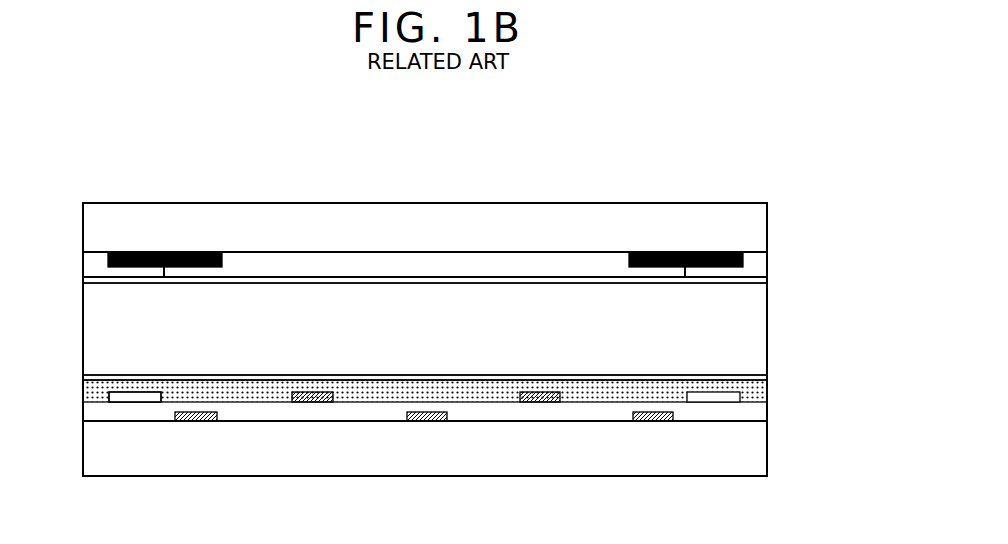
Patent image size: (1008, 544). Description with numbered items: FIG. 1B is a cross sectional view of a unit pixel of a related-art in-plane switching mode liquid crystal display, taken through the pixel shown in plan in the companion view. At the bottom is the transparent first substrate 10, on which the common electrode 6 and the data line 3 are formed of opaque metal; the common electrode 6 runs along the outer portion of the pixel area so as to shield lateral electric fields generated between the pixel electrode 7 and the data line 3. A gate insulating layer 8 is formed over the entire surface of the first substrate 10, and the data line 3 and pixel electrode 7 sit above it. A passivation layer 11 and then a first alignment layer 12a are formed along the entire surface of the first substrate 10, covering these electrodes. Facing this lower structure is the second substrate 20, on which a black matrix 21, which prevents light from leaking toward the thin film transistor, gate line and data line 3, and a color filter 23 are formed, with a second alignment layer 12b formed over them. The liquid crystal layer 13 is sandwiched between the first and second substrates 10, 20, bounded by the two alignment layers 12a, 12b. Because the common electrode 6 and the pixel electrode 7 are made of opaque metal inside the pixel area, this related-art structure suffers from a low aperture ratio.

The second substrate 20 is at (753, 227).
The color filter 23 is at (490, 265).
The black matrix 21 is at (650, 252).
The second alignment layer 12b is at (753, 280).
The liquid crystal layer 13 is at (753, 332).
The first alignment layer 12a is at (753, 378).
The passivation layer 11 is at (753, 393).
The gate insulating layer 8 is at (753, 413).
The first substrate 10 is at (753, 455).
The data line 3 is at (132, 402).
The common electrode 6 is at (192, 421).
The pixel electrode 7 is at (307, 402).